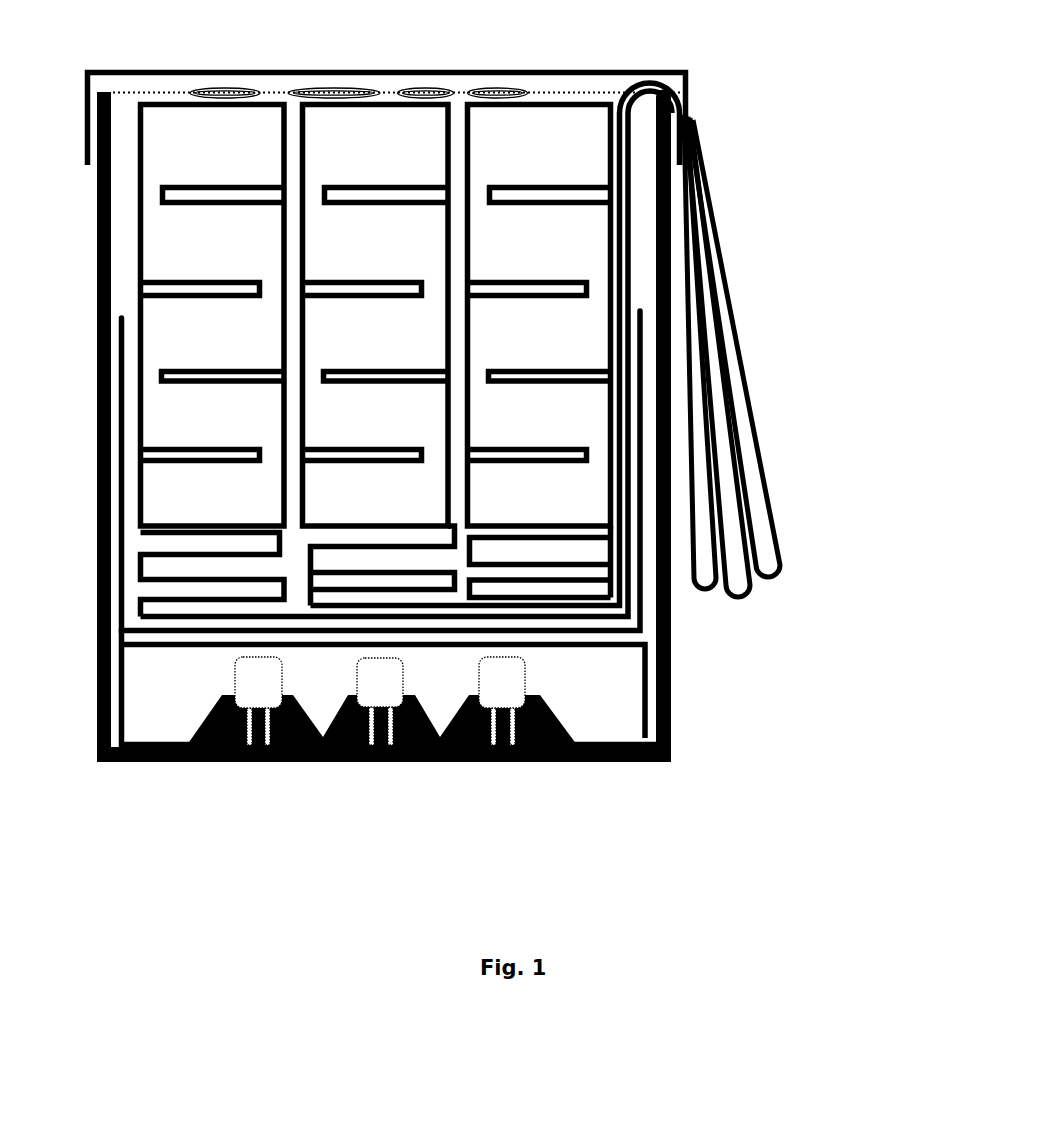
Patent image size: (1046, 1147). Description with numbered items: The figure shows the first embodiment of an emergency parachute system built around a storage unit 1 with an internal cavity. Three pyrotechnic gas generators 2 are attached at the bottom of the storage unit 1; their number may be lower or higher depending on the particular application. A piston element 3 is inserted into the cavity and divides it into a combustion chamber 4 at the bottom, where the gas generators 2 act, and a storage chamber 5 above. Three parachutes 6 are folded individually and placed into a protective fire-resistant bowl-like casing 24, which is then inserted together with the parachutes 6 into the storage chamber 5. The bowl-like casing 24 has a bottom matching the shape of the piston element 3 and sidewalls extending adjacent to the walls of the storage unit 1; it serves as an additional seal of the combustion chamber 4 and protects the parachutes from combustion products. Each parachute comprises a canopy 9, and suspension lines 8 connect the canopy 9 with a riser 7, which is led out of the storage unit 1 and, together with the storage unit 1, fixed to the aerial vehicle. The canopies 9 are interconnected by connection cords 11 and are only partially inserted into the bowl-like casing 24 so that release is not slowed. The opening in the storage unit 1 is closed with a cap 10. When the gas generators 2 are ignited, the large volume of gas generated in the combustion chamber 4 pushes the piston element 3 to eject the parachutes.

The storage unit 1 is at (692, 152).
The pyrotechnic gas generators 2 is at (378, 682).
The piston element 3 is at (649, 702).
The combustion chamber 4 is at (612, 680).
The storage chamber 5 is at (584, 554).
The parachutes 6 is at (455, 397).
The riser 7 is at (702, 522).
The suspension lines 8 is at (637, 513).
The canopy 9 is at (590, 262).
The cap 10 is at (627, 68).
The connection cords 11 is at (498, 87).
The bowl-like casing 24 is at (643, 405).